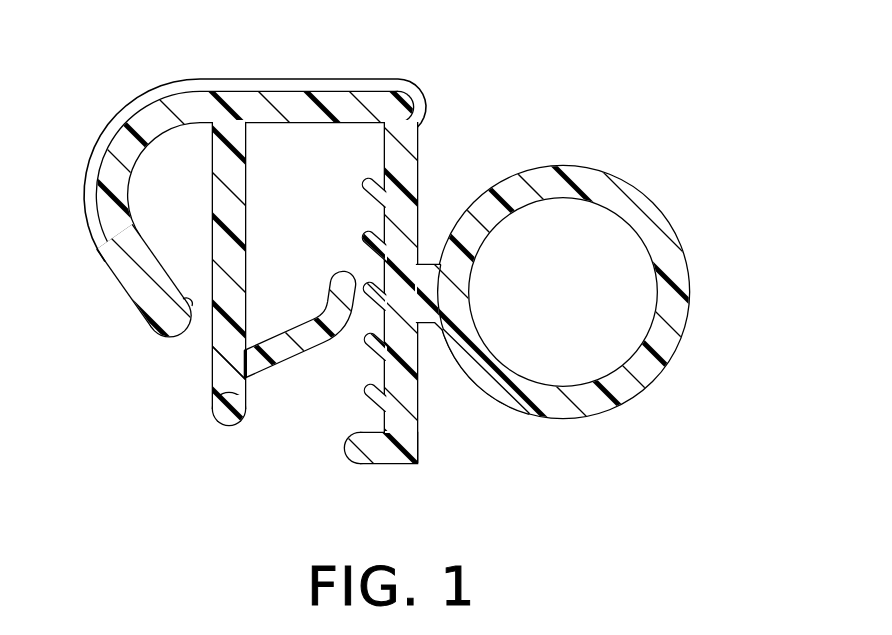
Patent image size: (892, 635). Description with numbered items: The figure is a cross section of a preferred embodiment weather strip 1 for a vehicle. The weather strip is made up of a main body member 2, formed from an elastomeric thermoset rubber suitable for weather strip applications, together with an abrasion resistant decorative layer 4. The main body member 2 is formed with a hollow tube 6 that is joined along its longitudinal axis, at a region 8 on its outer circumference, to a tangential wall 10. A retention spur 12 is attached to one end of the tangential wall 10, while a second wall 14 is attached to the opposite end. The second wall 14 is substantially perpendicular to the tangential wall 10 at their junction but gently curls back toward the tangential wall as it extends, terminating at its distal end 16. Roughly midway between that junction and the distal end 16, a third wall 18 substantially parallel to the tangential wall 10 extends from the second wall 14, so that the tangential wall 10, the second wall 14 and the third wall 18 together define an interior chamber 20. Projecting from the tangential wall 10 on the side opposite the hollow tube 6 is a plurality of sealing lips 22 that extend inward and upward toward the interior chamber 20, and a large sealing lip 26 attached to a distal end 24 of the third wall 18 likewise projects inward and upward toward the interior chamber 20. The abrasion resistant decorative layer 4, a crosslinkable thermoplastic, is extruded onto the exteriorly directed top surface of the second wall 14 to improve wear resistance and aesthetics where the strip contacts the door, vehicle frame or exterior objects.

The weatherstrip seal assembly 1 is at (446, 317).
The main body member 2 is at (563, 163).
The abrasion resistant decorative layer 4 is at (322, 80).
The hollow tube 6 is at (695, 301).
The region 8 is at (432, 326).
The tangential wall 10 is at (407, 160).
The retention spur 12 is at (366, 465).
The second wall 14 is at (287, 105).
The distal end 16 is at (145, 305).
The third wall 18 is at (212, 334).
The interior chamber 20 is at (288, 192).
The sealing lips 22 is at (360, 347).
The distal end 24 is at (213, 421).
The large sealing lip 26 is at (273, 373).